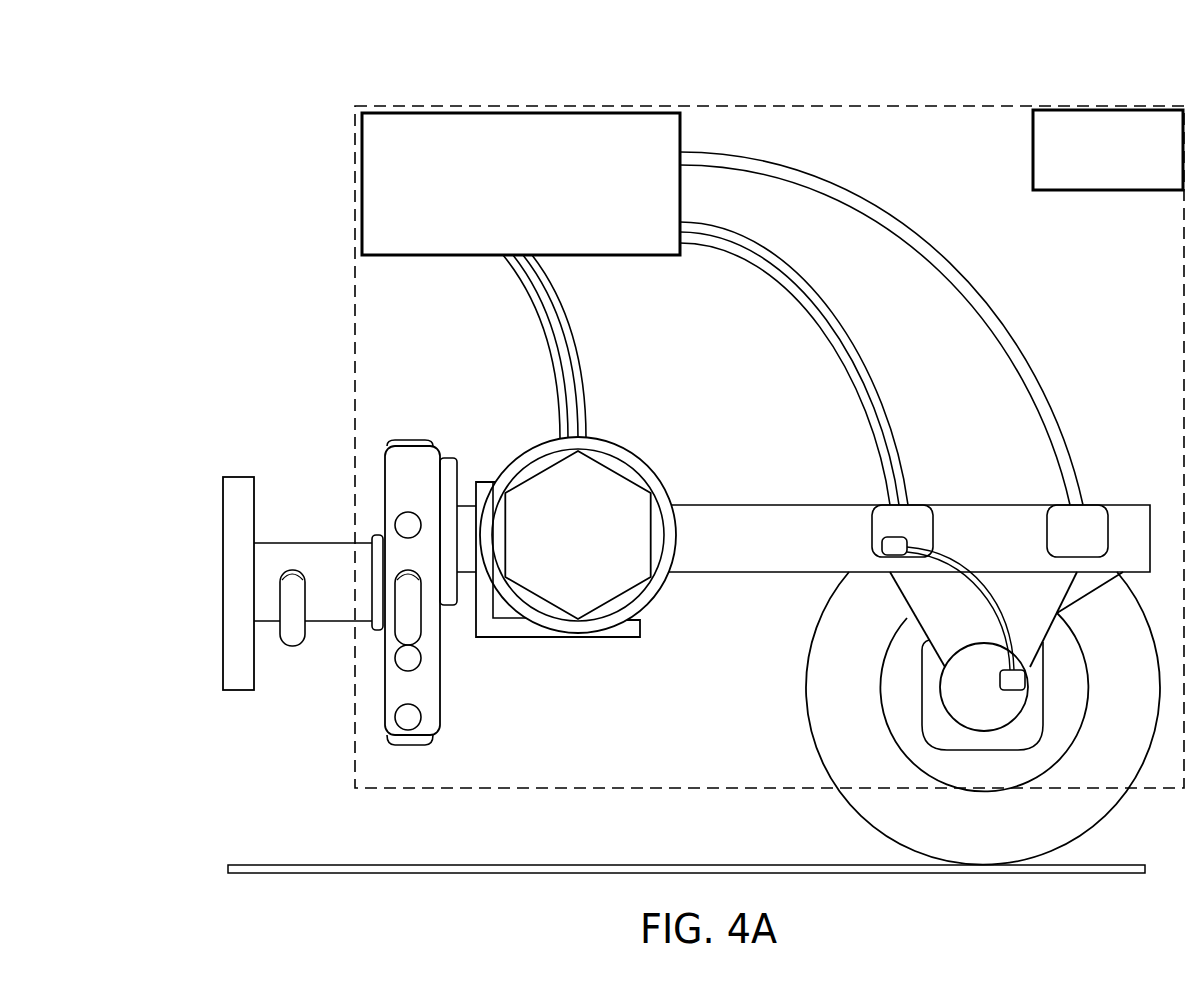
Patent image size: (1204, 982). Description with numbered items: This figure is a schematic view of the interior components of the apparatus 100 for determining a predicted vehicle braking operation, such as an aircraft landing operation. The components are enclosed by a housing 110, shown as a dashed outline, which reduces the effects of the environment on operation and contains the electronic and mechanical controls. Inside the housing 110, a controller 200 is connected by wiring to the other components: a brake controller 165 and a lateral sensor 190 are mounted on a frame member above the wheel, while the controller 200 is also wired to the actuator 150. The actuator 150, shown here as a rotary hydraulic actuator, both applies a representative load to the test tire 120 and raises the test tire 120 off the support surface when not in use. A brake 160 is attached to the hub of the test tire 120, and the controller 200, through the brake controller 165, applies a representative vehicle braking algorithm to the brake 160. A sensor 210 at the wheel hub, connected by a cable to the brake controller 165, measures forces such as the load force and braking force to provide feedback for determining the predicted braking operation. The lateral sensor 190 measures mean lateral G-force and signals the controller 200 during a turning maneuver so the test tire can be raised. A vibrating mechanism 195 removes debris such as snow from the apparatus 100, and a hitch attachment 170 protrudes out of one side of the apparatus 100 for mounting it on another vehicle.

The apparatus 100 is at (218, 147).
The housing 110 is at (355, 368).
The first test tire 120 is at (1100, 806).
The actuator 150 is at (618, 481).
The brake 160 is at (880, 688).
The brake controller 165 is at (878, 518).
The hitch attachment 170 is at (303, 535).
The lateral sensor 190 is at (1095, 518).
The vibrating mechanism 195 is at (1108, 150).
The controller 200 is at (542, 200).
The sensor 210 is at (1025, 680).